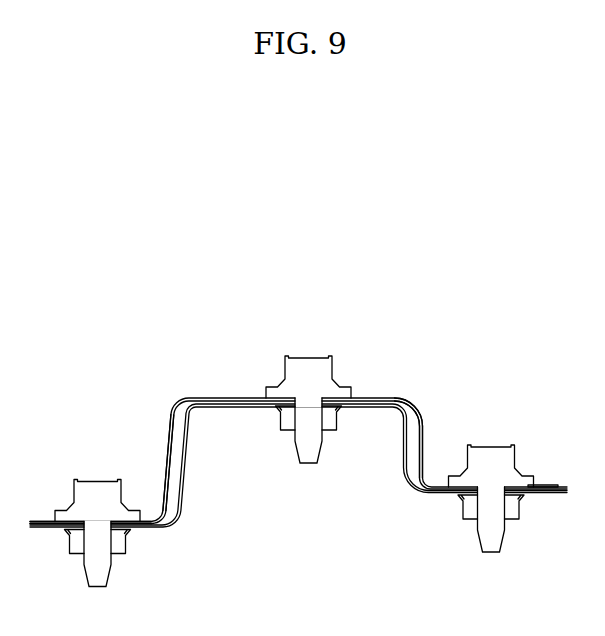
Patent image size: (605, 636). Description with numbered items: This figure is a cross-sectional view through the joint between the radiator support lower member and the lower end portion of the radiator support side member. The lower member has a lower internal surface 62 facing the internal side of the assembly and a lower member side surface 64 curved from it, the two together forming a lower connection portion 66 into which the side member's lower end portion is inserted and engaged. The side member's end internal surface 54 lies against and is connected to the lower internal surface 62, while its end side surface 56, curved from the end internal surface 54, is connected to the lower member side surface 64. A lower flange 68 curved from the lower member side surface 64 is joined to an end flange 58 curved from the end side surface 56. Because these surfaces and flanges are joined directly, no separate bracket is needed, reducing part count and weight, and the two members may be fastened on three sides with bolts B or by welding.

The end internal surface 54 is at (362, 407).
The end side surface 56 is at (403, 453).
The end flange 58 is at (163, 527).
The lower internal surface 62 is at (390, 398).
The lower member side surface 64 is at (420, 435).
The lower connection portion 66 is at (235, 447).
The lower flange 68 is at (545, 487).
The bolts B is at (95, 492).